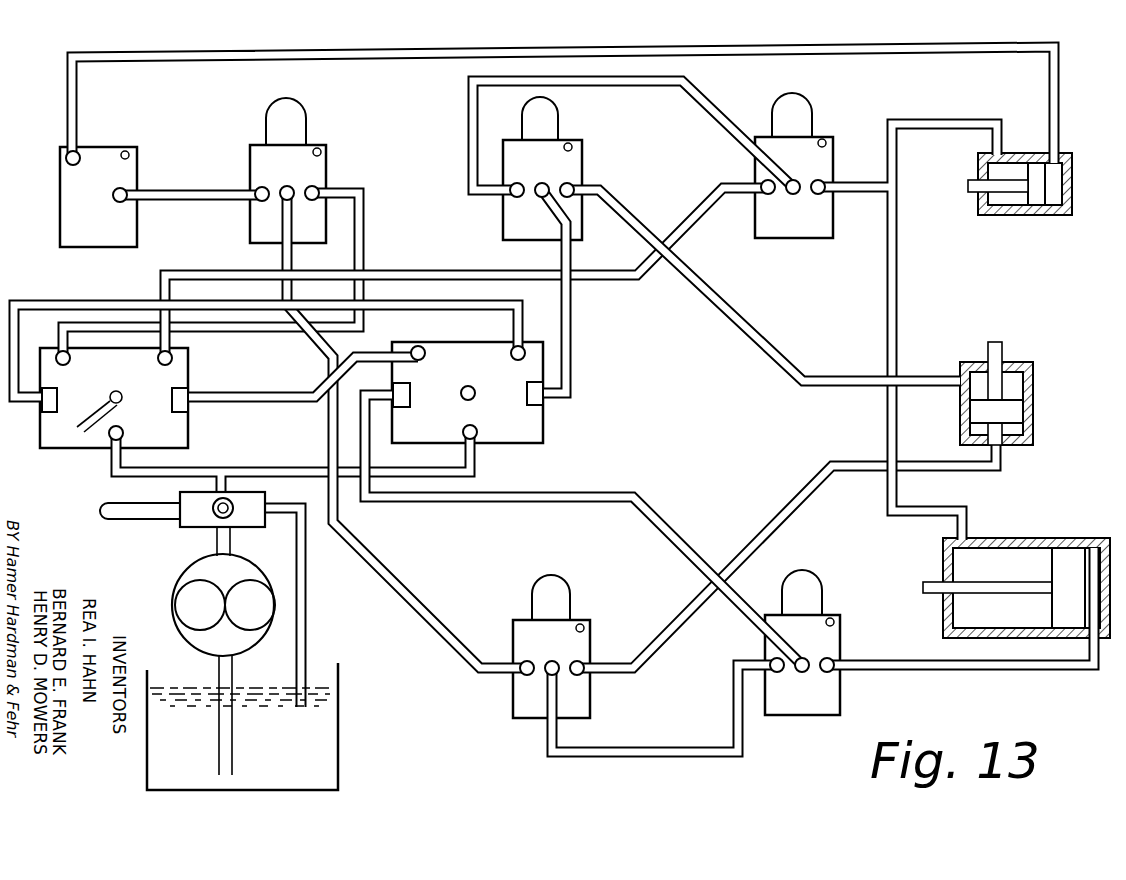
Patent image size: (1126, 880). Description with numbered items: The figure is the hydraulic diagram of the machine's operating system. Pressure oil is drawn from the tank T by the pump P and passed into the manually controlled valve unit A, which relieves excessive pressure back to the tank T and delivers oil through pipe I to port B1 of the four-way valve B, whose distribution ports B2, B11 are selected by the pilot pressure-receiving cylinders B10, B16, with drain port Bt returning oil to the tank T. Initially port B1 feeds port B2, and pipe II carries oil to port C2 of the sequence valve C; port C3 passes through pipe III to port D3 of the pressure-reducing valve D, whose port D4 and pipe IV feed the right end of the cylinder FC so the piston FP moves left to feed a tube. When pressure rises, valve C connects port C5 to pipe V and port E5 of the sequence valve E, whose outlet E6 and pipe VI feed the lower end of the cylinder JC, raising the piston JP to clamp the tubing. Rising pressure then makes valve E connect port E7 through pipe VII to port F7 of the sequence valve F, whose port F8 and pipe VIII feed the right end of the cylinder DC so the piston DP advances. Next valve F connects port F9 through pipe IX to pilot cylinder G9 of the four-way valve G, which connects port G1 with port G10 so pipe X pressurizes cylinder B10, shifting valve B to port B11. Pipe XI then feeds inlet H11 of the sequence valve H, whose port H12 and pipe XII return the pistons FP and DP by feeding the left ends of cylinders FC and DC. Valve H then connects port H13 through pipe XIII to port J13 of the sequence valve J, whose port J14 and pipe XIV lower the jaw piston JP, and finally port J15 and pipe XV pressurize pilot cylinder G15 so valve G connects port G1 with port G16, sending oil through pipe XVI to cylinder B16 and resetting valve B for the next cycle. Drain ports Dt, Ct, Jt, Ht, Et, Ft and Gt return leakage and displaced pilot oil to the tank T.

The valve unit A is at (190, 528).
The pump P is at (172, 610).
The tank T is at (340, 724).
The four-way valve B is at (40, 436).
The port B1 is at (123, 435).
The distribution port B2 is at (70, 361).
The pilot pressure-receiving cylinder B10 is at (172, 404).
The distribution port B11 is at (158, 360).
The pilot pressure-receiving cylinder B16 is at (57, 404).
The drain port Bt is at (80, 445).
The sequence valve C is at (297, 112).
The port C2 is at (312, 200).
The port C3 is at (264, 201).
The port C5 is at (292, 178).
The drain port Ct is at (322, 149).
The pressure-reducing valve D is at (110, 147).
The port D3 is at (116, 202).
The port D4 is at (78, 165).
The drain port Dt is at (130, 152).
The sequence valve E is at (558, 578).
The port E5 is at (528, 675).
The outlet E6 is at (577, 675).
The port E7 is at (558, 655).
The drain port Et is at (585, 624).
The sequence valve F is at (820, 586).
The port F7 is at (779, 672).
The port F8 is at (827, 672).
The port F9 is at (806, 657).
The drain port Ft is at (835, 618).
The four-way valve G is at (452, 328).
The port G1 is at (463, 433).
The pilot pressure cylinder G9 is at (412, 404).
The port G10 is at (418, 360).
The pilot pressure cylinder G15 is at (535, 406).
The port G16 is at (515, 362).
The drain port Gt is at (466, 401).
The sequence valve H is at (812, 108).
The inlet H11 is at (770, 194).
The port H12 is at (818, 194).
The port H13 is at (796, 180).
The drain port Ht is at (827, 140).
The sequence valve J is at (566, 138).
The port J13 is at (519, 197).
The port J14 is at (570, 184).
The port J15 is at (540, 176).
The drain port Jt is at (573, 145).
The cylinder FC is at (1072, 158).
The piston FP is at (1040, 206).
The cylinder JC is at (1033, 368).
The piston JP is at (1020, 412).
The cylinder DC is at (1056, 538).
The piston DP is at (1060, 564).
The pipe I is at (110, 482).
The pipe II is at (366, 258).
The pipe III is at (212, 202).
The pipe IV is at (220, 65).
The pipe V is at (292, 270).
The pipe VI is at (675, 640).
The pipe VII is at (655, 748).
The pipe VIII is at (1024, 672).
The pipe IX is at (504, 503).
The pipe X is at (244, 392).
The pipe XI is at (490, 270).
The pipe XII is at (940, 118).
The pipe XIII is at (724, 94).
The pipe XIV is at (772, 325).
The pipe XV is at (574, 352).
The pipe XVI is at (132, 302).